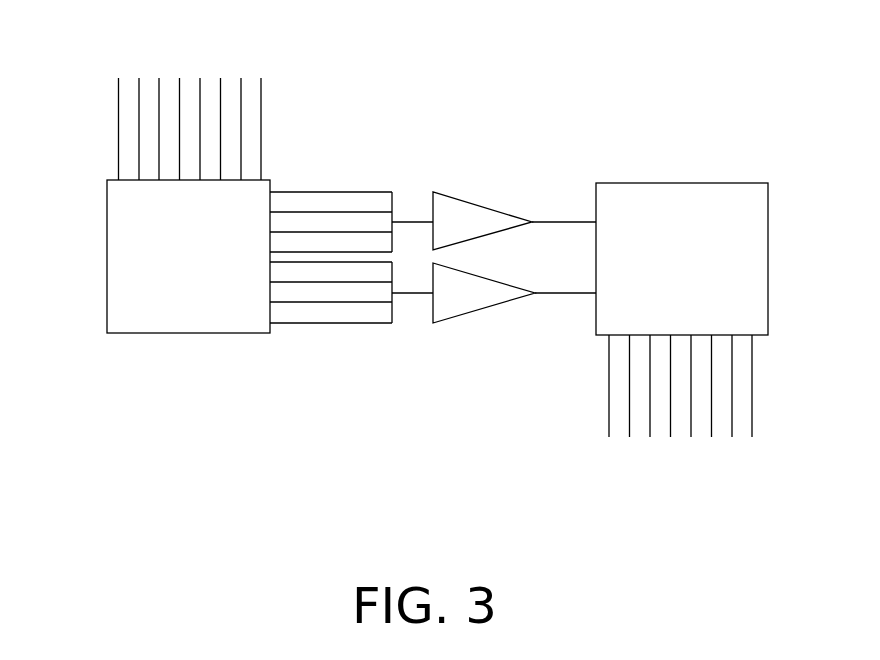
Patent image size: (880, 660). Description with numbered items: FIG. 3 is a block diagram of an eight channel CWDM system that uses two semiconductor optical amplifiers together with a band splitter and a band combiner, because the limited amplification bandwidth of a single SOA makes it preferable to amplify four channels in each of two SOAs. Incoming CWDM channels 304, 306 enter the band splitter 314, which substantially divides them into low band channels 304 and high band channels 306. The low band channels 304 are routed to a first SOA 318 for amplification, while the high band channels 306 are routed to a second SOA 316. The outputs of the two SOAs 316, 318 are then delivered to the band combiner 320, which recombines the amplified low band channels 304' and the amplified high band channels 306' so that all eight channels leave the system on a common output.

The low band channels 304 is at (331, 147).
The high band channels 306 is at (218, 224).
The band splitter 314 is at (157, 335).
The second SOA 316 is at (500, 280).
The first SOA 318 is at (472, 200).
The band combiner 320 is at (688, 182).
The amplified low band channels 304' is at (776, 376).
The amplified high band channels 306' is at (594, 376).